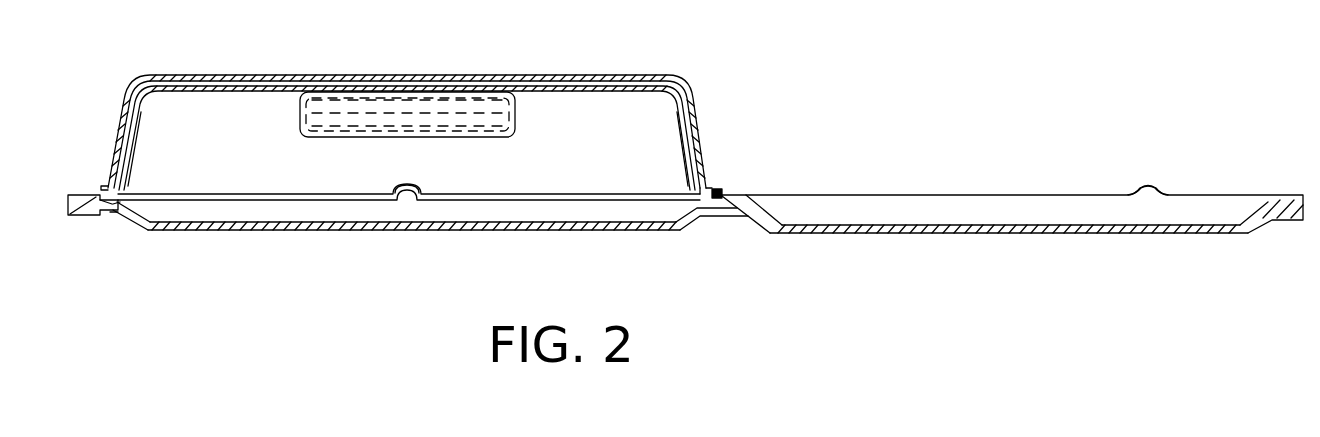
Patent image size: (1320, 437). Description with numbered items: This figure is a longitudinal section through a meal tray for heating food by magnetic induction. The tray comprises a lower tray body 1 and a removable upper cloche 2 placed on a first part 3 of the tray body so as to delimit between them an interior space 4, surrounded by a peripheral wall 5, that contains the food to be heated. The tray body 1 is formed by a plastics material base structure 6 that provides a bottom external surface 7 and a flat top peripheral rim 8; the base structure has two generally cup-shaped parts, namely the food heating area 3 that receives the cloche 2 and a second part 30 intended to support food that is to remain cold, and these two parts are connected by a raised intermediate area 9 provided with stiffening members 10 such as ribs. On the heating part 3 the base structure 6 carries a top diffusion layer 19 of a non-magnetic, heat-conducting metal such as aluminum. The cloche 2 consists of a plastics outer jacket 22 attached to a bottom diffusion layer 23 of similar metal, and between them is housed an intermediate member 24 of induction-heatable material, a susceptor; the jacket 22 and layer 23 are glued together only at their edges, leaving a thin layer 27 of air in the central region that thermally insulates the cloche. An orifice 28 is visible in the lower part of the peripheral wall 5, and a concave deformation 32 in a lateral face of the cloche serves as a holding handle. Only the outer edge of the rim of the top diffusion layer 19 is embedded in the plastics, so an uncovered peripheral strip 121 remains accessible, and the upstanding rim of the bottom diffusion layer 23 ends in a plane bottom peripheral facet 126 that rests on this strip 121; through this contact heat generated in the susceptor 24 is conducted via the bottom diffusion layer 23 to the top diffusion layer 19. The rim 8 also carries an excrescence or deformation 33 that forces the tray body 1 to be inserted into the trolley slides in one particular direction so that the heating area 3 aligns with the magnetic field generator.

The lower tray body 1 is at (825, 242).
The removable upper cloche 2 is at (577, 70).
The first part of the tray body 3 is at (285, 232).
The interior space 4 is at (205, 108).
The peripheral wall 5 is at (698, 120).
The base structure 6 is at (368, 232).
The bottom external surface 7 is at (511, 240).
The top peripheral rim 8 is at (78, 196).
The raised intermediate area 9 is at (741, 238).
The stiffening members 10 is at (700, 218).
The top diffusion layer 19 is at (238, 218).
The outer jacket 22 is at (385, 77).
The bottom diffusion layer 23 is at (619, 102).
The intermediate member 24 is at (236, 88).
The thin layer of air 27 is at (162, 76).
The orifice 28 is at (410, 200).
The second part of the tray body 30 is at (997, 235).
The concave deformation 32 is at (345, 97).
The excrescences or deformations 33 is at (1138, 192).
The peripheral strip 121 is at (722, 188).
The bottom peripheral facet 126 is at (113, 218).